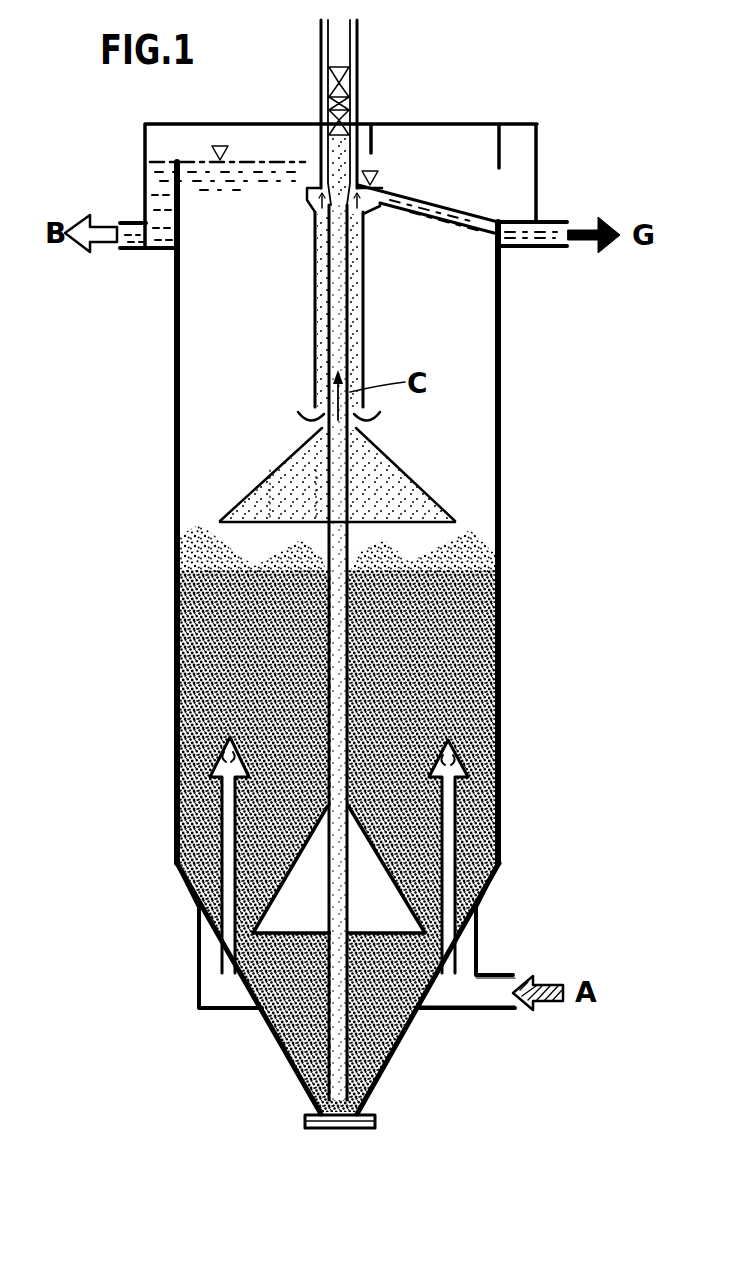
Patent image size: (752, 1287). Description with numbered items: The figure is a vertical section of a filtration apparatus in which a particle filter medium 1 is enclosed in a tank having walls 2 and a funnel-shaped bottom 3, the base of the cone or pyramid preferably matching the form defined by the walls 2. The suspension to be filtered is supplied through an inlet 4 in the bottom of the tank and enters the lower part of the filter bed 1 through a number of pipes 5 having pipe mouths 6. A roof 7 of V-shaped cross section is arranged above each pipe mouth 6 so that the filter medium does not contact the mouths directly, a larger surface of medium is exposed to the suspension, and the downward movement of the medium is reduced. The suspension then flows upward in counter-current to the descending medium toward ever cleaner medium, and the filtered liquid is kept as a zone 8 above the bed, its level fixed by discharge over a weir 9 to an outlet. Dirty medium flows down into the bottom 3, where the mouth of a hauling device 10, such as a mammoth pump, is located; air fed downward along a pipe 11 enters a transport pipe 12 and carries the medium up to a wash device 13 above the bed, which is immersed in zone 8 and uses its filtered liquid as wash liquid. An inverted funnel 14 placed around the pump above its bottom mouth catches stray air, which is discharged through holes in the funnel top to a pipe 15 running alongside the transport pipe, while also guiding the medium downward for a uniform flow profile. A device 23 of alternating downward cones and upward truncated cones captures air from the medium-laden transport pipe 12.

The particle filter medium 1 is at (175, 640).
The walls 2 is at (174, 422).
The funnel-shaped bottom 3 is at (270, 1047).
The inlet 4 is at (477, 1012).
The pipes 5 is at (458, 963).
The pipe mouths 6 is at (497, 787).
The roof 7 is at (497, 742).
The zone of filtrated liquid phase 8 is at (205, 373).
The weir 9 is at (178, 160).
The hauling device 10 is at (322, 892).
The pipe 11 is at (320, 46).
The transport pipe 12 is at (388, 1072).
The wash device 13 is at (368, 330).
The funnel 14 is at (397, 888).
The pipe 15 is at (358, 46).
The device for capturing air 23 is at (343, 92).